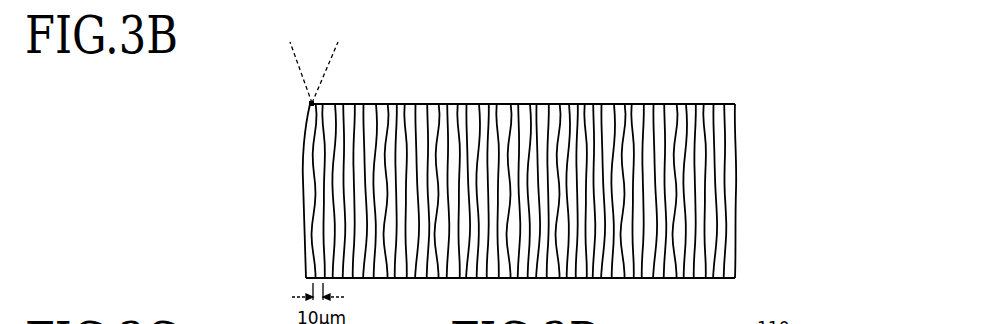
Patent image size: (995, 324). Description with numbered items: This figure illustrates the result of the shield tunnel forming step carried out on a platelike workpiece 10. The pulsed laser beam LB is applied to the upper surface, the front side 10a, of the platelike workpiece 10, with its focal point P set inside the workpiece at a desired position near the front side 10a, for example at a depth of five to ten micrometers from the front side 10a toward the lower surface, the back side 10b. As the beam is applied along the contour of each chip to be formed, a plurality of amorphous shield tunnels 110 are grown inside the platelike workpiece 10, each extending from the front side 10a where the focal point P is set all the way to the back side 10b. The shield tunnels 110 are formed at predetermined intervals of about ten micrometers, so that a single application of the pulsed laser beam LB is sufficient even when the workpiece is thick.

The platelike workpiece 10 is at (519, 183).
The front side 10a is at (505, 104).
The back side 10b is at (393, 279).
The shield tunnel 110 is at (463, 122).
The focal point P is at (307, 106).
The pulsed laser beam LB is at (331, 66).